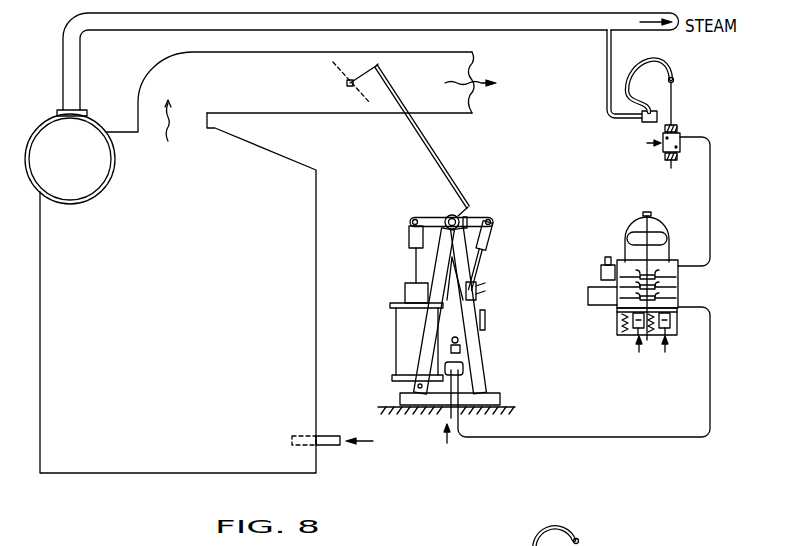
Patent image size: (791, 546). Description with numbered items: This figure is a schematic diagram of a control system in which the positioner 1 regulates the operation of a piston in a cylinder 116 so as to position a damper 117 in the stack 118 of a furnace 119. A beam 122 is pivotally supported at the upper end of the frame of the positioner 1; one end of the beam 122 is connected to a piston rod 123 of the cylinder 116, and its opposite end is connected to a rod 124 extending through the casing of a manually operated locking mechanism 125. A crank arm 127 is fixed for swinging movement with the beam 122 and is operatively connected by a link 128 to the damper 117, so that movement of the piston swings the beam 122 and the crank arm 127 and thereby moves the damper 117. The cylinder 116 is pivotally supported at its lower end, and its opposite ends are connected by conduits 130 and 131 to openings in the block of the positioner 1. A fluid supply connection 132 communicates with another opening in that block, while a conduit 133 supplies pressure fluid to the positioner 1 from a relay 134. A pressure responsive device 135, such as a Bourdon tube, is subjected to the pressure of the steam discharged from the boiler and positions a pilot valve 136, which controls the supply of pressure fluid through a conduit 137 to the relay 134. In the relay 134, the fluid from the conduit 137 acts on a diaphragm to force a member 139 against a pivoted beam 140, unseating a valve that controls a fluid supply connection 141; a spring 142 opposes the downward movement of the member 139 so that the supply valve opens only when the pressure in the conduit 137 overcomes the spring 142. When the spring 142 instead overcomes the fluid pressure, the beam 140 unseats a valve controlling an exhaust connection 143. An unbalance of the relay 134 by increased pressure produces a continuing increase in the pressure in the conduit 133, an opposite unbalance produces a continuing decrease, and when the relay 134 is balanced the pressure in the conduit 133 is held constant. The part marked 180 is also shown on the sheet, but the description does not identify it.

The positioner 1 is at (486, 320).
The cylinder 116 is at (396, 320).
The damper 117 is at (338, 70).
The stack 118 is at (305, 115).
The furnace 119 is at (172, 315).
The beam 122 is at (436, 215).
The piston rod 123 is at (409, 253).
The rod 124 is at (483, 255).
The manually operated locking mechanism 125 is at (480, 290).
The crank arm 127 is at (470, 211).
The link 128 is at (438, 156).
The conduit 130 is at (440, 370).
The conduit 131 is at (451, 352).
The fluid supply connection 132 is at (447, 415).
The conduit 133 is at (592, 437).
The relay 134 is at (648, 283).
The pressure responsive device 135 is at (673, 70).
The pilot valve 136 is at (665, 150).
The conduit 137 is at (712, 145).
The member 139 is at (643, 253).
The pivoted beam 140 is at (618, 312).
The fluid supply connection 141 is at (634, 340).
The spring 142 is at (668, 240).
The exhaust connection 143 is at (660, 340).
The tube 180 is at (536, 528).